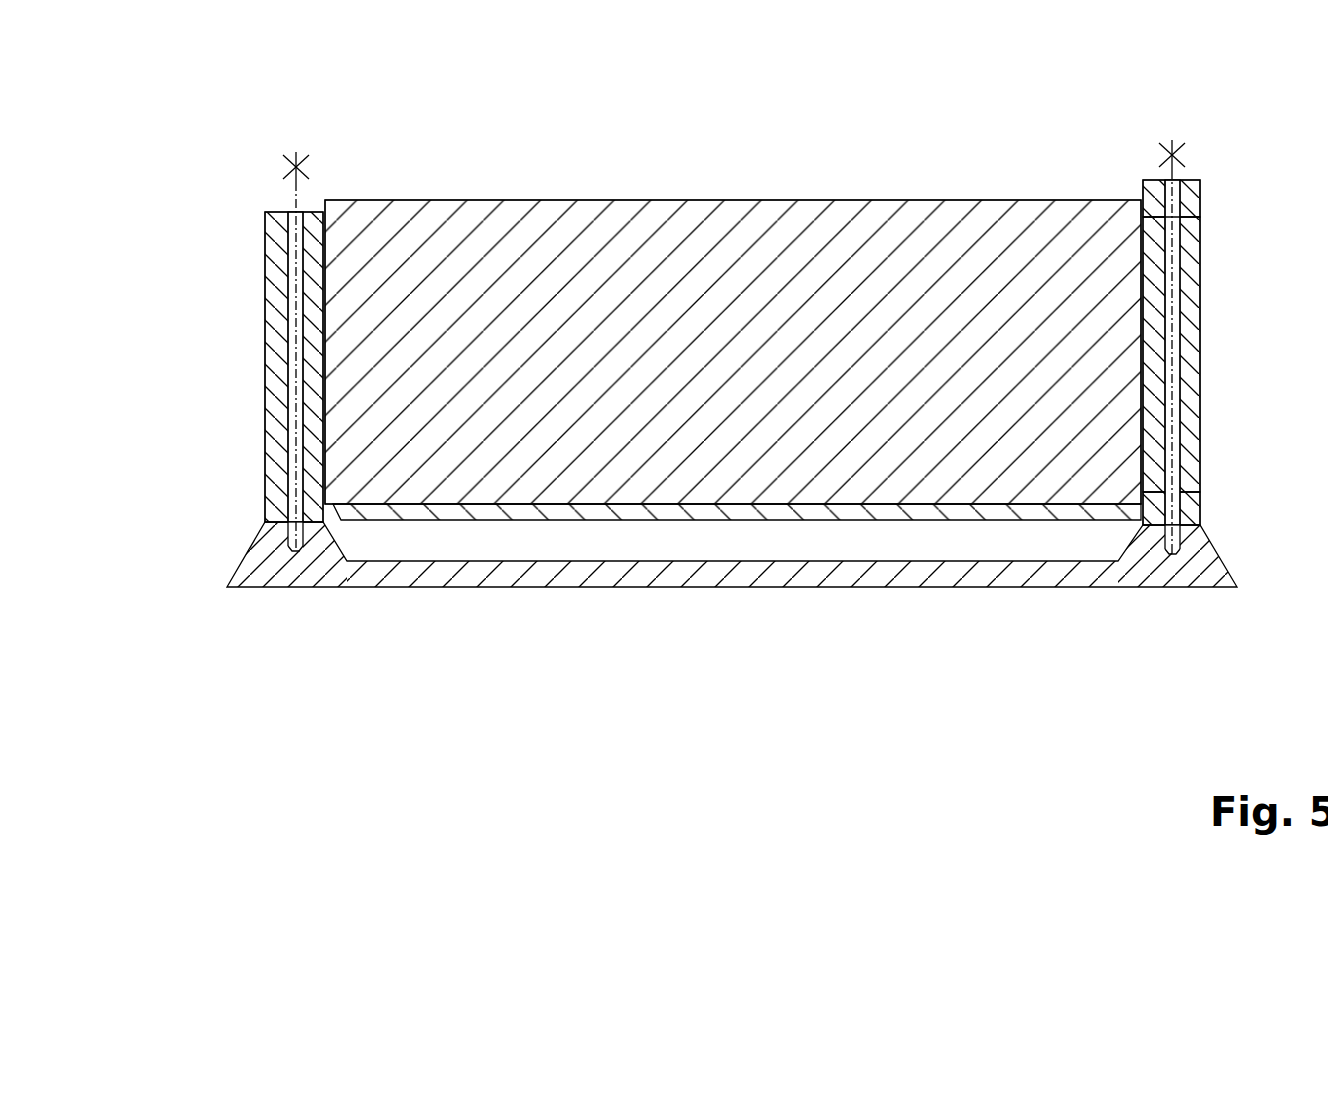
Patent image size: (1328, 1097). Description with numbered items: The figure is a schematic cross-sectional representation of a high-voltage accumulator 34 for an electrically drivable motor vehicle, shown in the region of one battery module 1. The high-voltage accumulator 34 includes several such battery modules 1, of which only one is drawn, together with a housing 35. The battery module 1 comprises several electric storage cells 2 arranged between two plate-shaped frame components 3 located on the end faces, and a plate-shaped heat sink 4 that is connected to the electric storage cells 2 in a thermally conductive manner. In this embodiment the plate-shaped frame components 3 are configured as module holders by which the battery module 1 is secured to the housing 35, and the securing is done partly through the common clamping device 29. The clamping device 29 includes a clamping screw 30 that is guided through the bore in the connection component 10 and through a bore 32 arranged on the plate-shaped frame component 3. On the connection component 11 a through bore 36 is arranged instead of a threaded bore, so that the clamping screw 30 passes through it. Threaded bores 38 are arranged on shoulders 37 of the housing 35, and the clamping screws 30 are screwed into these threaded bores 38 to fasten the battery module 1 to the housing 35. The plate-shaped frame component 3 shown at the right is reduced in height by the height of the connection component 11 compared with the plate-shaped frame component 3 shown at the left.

The battery module 1 is at (1005, 196).
The electric storage cells 2 is at (543, 245).
The plate-shaped frame component 3 is at (278, 248).
The heat sink 4 is at (593, 508).
The connection component 10 is at (1190, 193).
The connection component 11 is at (1193, 517).
The clamping device 29 is at (291, 337).
The clamping screw 30 is at (295, 401).
The bore 32 is at (285, 466).
The high-voltage accumulator 34 is at (294, 114).
The housing 35 is at (458, 565).
The through bore 36 is at (1195, 505).
The shoulder 37 is at (258, 567).
The threaded bore 38 is at (288, 530).